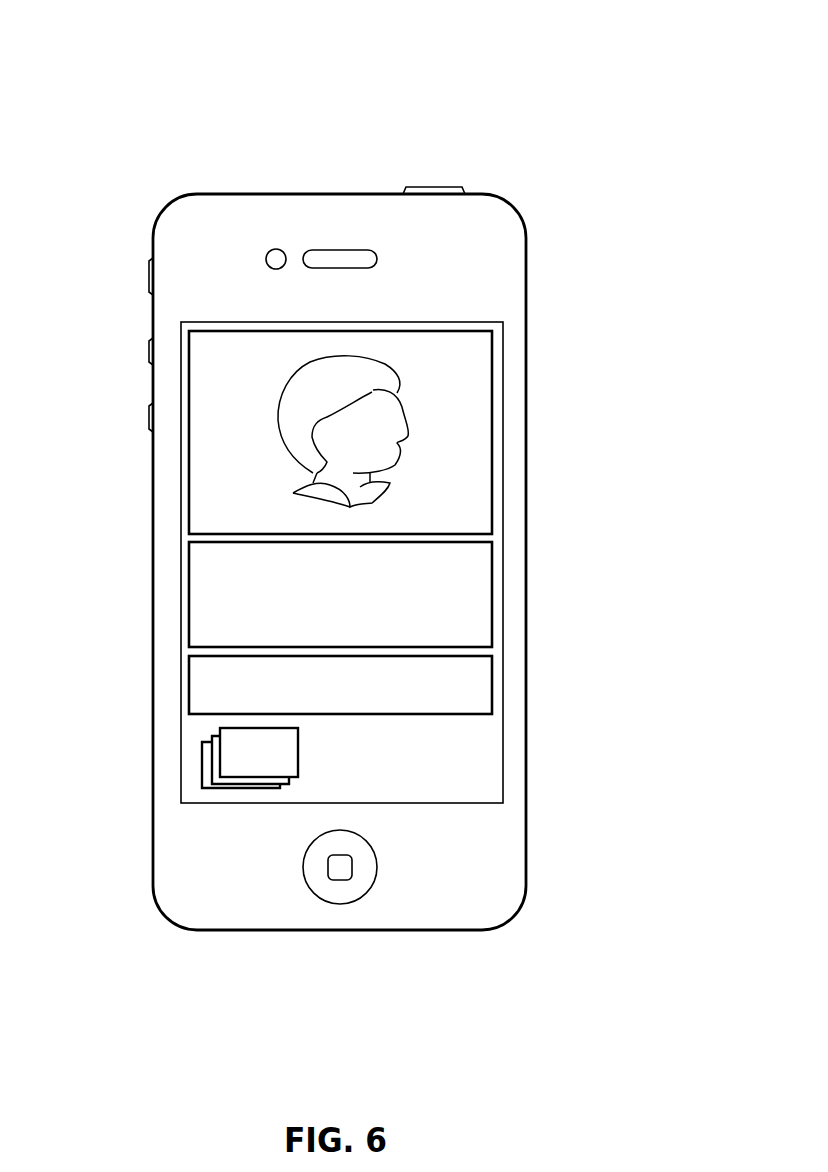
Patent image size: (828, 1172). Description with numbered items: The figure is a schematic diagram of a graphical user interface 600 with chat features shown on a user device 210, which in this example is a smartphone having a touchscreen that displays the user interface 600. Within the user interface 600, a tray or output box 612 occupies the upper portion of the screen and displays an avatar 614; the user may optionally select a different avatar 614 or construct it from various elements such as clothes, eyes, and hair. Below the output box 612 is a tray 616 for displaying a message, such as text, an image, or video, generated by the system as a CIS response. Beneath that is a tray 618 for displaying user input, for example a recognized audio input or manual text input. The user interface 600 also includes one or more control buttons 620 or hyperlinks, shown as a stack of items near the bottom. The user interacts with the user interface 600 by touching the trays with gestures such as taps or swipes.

The graphical user interface 600 is at (643, 60).
The user device 210 is at (494, 199).
The tray (output box) 612 is at (494, 362).
The avatar 614 is at (421, 462).
The tray for displaying a message 616 is at (216, 622).
The tray for displaying user input 618 is at (221, 692).
The control buttons 620 is at (249, 759).